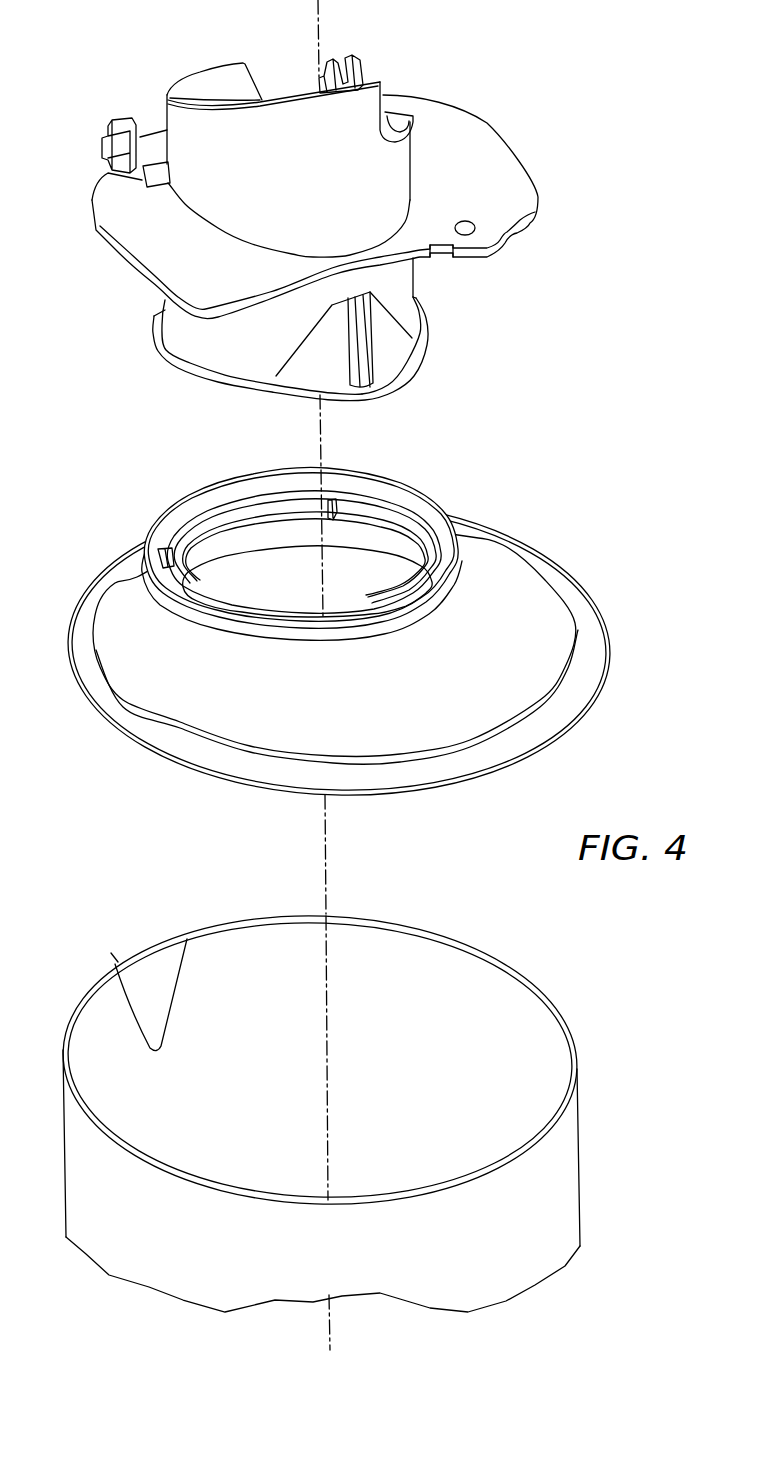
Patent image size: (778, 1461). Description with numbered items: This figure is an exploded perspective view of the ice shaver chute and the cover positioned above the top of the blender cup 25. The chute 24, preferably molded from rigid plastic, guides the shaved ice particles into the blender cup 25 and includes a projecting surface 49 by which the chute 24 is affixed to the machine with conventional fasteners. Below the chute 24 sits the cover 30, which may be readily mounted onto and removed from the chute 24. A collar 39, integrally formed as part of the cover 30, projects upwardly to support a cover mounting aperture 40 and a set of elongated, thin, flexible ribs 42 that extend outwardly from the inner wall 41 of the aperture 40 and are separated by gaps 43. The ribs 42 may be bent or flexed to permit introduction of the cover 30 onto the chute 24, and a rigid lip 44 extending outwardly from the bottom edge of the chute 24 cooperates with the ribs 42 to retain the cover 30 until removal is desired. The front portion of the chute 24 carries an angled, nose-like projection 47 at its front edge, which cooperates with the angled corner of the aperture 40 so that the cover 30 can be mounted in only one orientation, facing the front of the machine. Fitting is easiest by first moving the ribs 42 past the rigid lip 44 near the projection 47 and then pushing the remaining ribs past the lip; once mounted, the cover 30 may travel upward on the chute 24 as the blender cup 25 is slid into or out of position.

The chute 24 is at (330, 174).
The blender cup 25 is at (580, 1157).
The cover 30 is at (226, 697).
The collar 39 is at (455, 514).
The cover mounting aperture 40 is at (358, 582).
The inner wall 41 is at (195, 513).
The flexible ribs 42 is at (378, 513).
The gaps 43 is at (331, 503).
The rigid lip 44 is at (422, 330).
The nose-like projection 47 is at (385, 345).
The projecting surface 49 is at (490, 166).